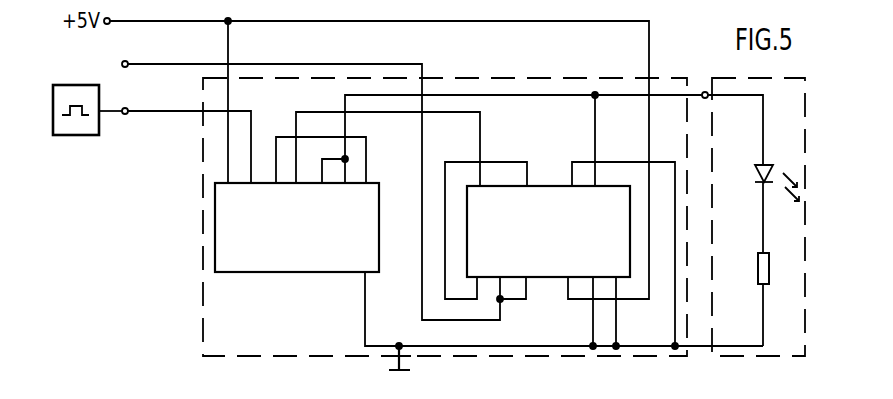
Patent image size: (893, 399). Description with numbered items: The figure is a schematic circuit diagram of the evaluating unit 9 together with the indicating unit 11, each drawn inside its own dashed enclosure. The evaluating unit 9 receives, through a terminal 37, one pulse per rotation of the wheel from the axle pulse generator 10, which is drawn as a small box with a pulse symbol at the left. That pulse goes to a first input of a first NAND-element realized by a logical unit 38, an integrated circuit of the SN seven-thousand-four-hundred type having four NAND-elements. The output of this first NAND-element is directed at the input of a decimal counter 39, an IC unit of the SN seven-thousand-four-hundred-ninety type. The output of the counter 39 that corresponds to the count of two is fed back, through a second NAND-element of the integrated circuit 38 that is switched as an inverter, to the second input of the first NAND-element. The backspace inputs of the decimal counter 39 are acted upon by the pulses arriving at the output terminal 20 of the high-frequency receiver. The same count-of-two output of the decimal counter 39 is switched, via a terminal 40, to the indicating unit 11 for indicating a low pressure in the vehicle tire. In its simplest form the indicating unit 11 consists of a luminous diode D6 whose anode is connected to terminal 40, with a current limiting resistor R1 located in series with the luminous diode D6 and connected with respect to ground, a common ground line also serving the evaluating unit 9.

The evaluating unit 9 is at (518, 356).
The axle pulse generator 10 is at (87, 84).
The indicating unit 11 is at (740, 357).
The output terminal of the high-frequency receiver 20 is at (130, 62).
The terminal 37 is at (130, 109).
The logical unit 38 is at (288, 273).
The decimal counter 39 is at (552, 278).
The terminal 40 is at (705, 92).
The luminous diode D6 is at (755, 175).
The current limiting resistor R1 is at (757, 269).